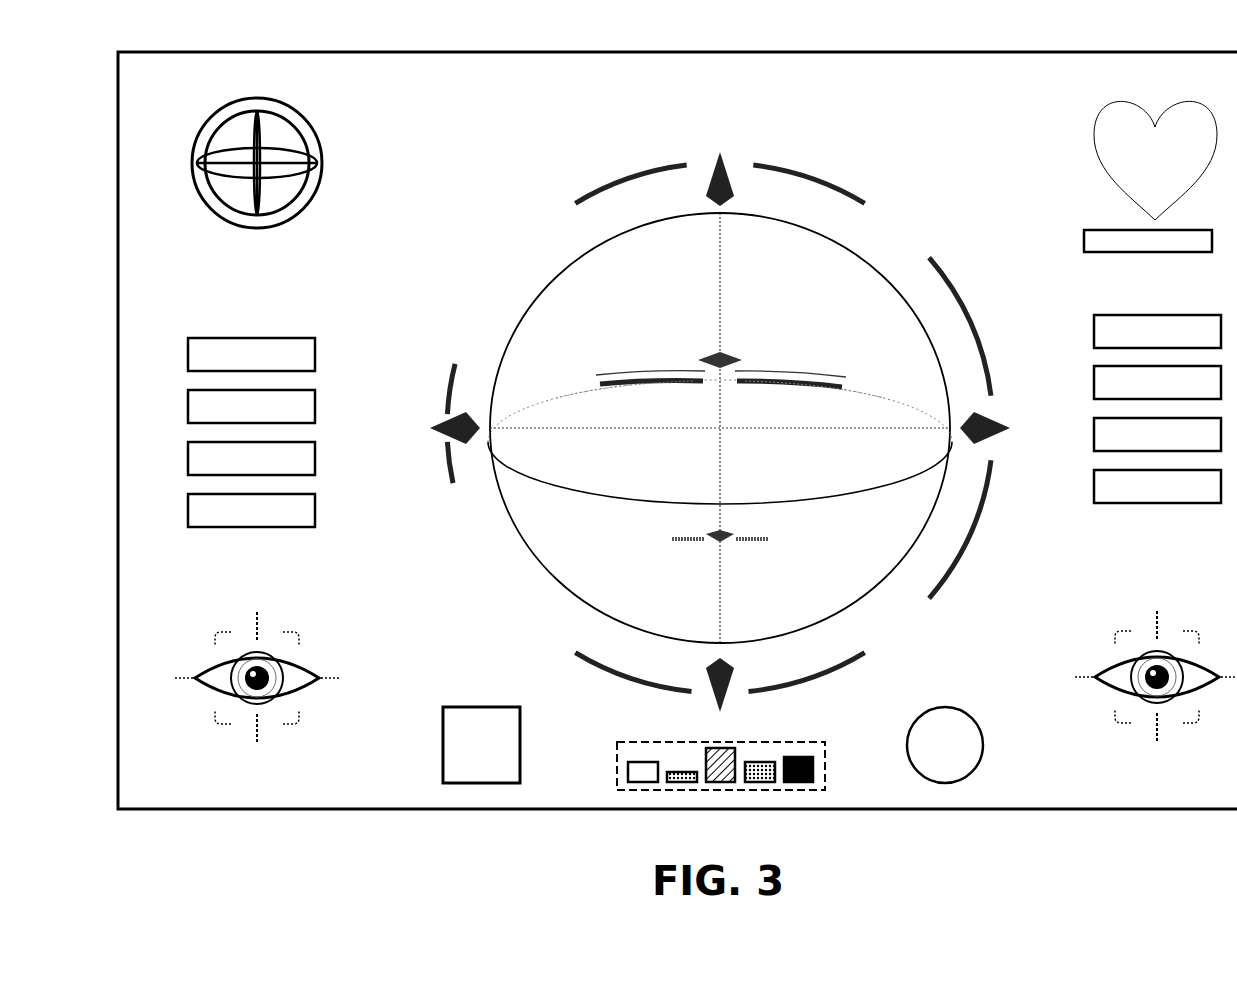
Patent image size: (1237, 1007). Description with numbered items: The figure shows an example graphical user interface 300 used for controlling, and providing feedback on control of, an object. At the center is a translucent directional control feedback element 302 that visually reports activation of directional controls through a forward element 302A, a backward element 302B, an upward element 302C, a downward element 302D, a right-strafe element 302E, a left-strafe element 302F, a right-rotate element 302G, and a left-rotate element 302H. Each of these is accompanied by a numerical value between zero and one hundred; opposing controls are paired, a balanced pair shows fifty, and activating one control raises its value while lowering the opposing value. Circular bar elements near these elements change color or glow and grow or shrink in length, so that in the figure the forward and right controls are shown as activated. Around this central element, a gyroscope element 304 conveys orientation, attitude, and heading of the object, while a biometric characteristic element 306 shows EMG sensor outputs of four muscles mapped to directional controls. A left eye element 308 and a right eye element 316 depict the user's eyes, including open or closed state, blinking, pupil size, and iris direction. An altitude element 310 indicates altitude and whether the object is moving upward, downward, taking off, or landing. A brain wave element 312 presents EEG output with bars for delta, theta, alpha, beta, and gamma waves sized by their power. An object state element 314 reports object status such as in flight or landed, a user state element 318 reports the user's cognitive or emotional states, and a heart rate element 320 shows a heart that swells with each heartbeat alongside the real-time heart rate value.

The graphical user interface 300 is at (677, 407).
The directional control feedback element 302 is at (548, 268).
The forward element 302A is at (721, 354).
The backward element 302B is at (689, 539).
The upward element 302C is at (719, 181).
The downward element 302D is at (719, 682).
The right-strafe element 302E is at (998, 428).
The left-strafe element 302F is at (422, 423).
The right-rotate element 302G is at (821, 355).
The left-rotate element 302H is at (621, 355).
The gyroscope element 304 is at (349, 147).
The biometric characteristic element 306 is at (349, 389).
The left eye element 308 is at (349, 662).
The altitude element 310 is at (426, 747).
The brain wave element 312 is at (613, 727).
The object state element 314 is at (968, 694).
The right eye element 316 is at (1084, 613).
The user state element 318 is at (1079, 372).
The heart rate element 320 is at (1086, 145).